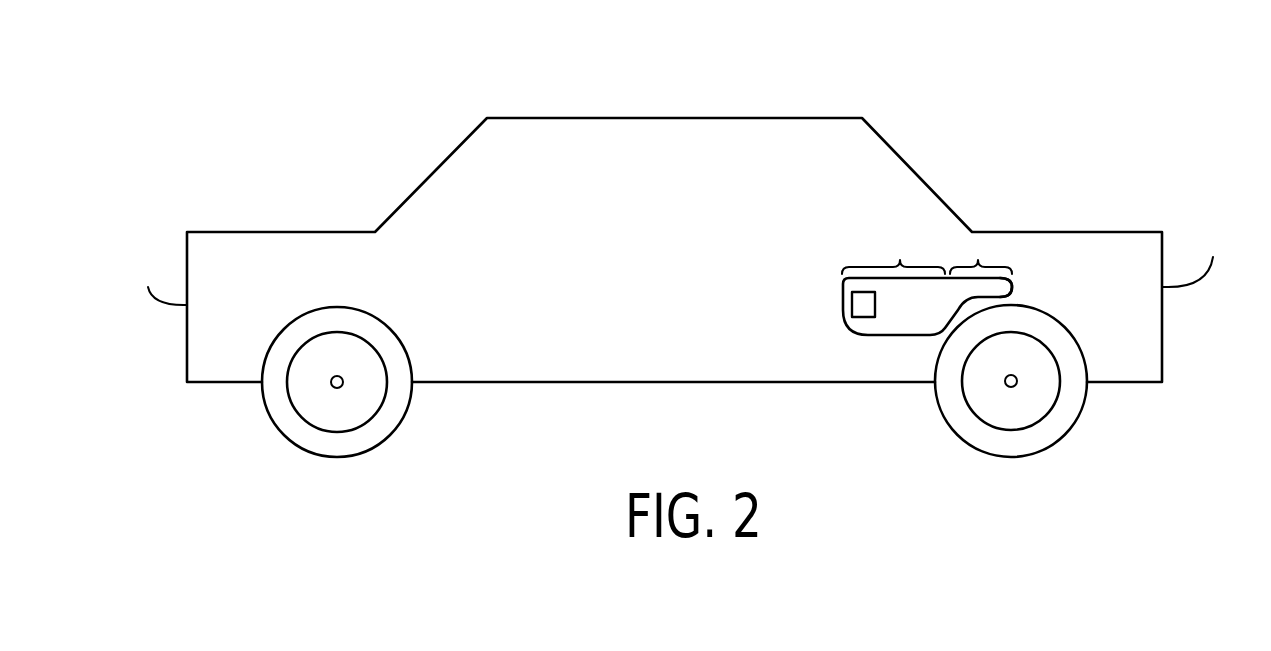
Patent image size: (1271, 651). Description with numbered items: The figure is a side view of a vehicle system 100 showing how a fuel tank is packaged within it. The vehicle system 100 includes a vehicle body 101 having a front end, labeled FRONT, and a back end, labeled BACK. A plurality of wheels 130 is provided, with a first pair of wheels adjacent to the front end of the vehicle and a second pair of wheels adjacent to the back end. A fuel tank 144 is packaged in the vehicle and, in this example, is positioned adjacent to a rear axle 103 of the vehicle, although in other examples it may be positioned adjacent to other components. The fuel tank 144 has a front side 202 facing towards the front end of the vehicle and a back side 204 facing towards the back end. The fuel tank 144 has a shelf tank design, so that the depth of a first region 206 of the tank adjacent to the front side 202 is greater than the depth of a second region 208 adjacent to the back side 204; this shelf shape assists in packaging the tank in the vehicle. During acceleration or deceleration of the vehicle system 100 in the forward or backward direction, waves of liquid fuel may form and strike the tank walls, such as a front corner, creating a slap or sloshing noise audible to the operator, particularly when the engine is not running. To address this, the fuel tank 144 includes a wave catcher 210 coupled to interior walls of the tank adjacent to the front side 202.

The vehicle system 100 is at (675, 257).
The vehicle body 101 is at (243, 231).
The rear axle 103 is at (1018, 385).
The wheels 130 is at (269, 417).
The fuel tank 144 is at (899, 344).
The front side 202 is at (843, 310).
The back side 204 is at (1013, 287).
The first region 206 is at (893, 252).
The second region 208 is at (981, 252).
The wave catcher 210 is at (860, 318).